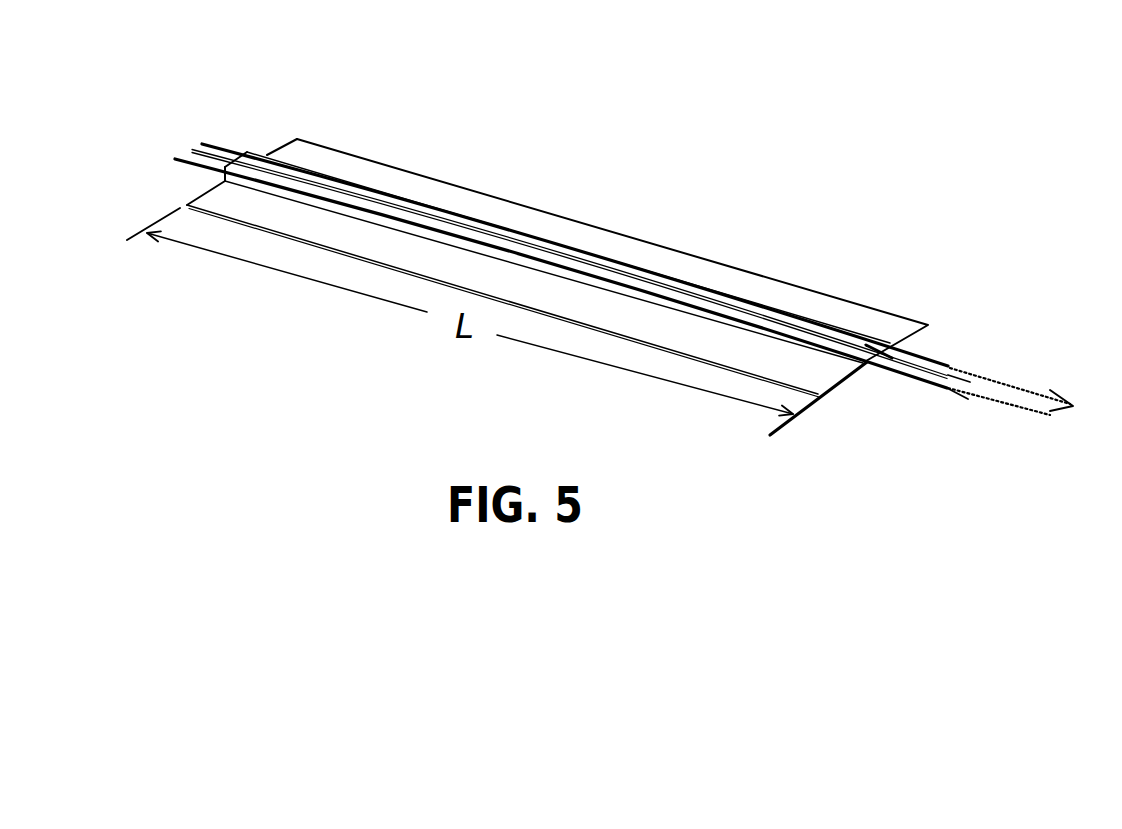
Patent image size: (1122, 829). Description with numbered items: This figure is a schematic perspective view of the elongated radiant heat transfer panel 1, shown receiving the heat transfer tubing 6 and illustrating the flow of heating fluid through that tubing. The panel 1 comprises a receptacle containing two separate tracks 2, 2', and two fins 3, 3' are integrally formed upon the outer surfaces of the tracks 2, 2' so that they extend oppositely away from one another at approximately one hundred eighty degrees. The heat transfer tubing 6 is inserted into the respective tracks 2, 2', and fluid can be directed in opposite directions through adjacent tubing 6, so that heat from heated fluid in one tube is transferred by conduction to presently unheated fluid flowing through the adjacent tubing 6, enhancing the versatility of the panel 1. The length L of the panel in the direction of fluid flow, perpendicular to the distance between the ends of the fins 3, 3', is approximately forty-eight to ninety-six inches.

The heat transfer panel 1 is at (653, 230).
The track 2 is at (527, 357).
The track 2' is at (897, 287).
The fin 3 is at (544, 289).
The fin 3' is at (568, 238).
The heat transfer tubing 6 is at (943, 352).